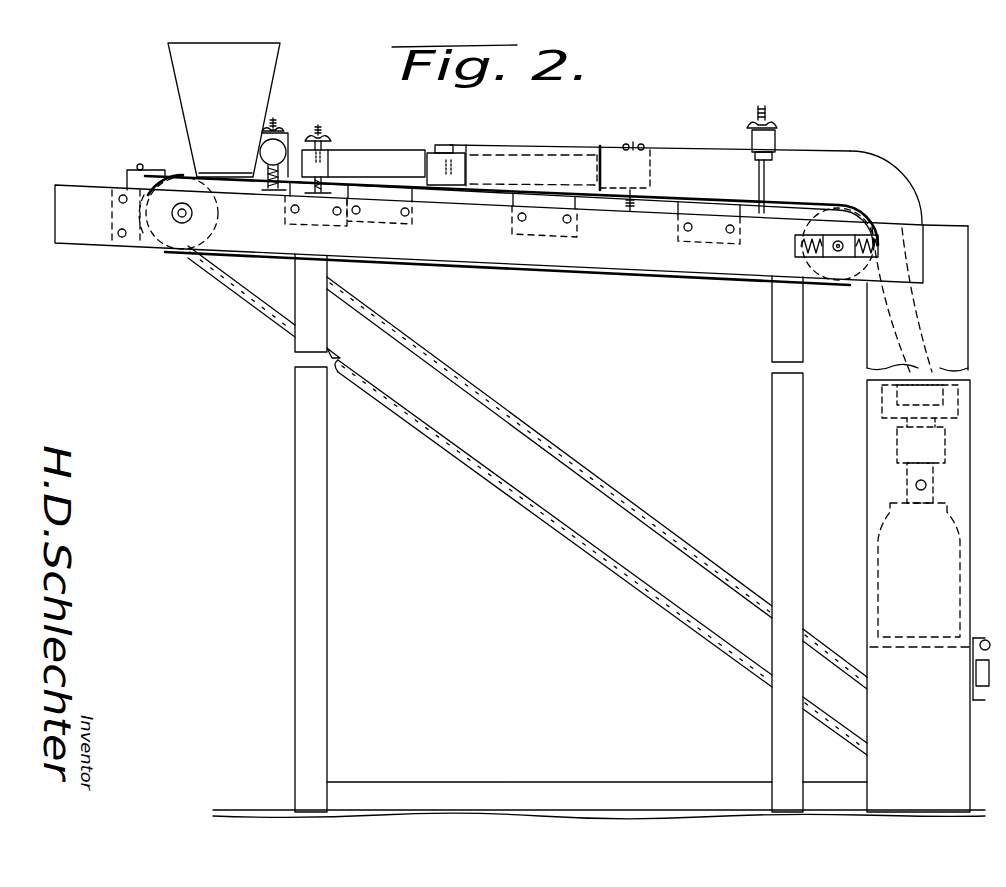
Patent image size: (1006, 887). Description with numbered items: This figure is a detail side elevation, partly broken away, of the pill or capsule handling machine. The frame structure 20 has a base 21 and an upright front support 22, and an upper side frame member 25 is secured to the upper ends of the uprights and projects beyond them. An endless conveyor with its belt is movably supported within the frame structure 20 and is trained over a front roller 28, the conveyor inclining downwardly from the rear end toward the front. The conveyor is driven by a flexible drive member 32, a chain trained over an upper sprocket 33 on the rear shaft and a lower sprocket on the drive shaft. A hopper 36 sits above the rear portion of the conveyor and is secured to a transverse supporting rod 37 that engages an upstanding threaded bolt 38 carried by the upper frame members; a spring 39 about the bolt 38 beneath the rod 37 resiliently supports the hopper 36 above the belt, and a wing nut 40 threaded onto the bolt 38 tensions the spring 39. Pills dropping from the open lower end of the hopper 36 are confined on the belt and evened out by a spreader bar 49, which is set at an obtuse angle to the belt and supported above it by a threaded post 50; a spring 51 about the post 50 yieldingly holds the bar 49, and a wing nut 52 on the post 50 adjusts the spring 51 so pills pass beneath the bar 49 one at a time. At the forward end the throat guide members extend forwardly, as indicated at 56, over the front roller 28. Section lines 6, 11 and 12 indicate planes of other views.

The section line 6- 6 is at (922, 372).
The section line 11- 11 is at (277, 118).
The section line 12- 12 is at (320, 123).
The frame structure 20 is at (770, 700).
The base 21 is at (643, 792).
The upright front support 22 is at (785, 455).
The upper side frame member 25 is at (636, 254).
The front roller 28 is at (300, 583).
The flexible drive member 32 is at (565, 460).
The upper sprocket 33 is at (212, 237).
The hopper 36 is at (190, 92).
The supporting rod 37 is at (267, 147).
The threaded bolt 38 is at (273, 127).
The spring 39 is at (262, 170).
The wing nut 40 is at (287, 128).
The spreader bar 49 is at (410, 152).
The threaded post 50 is at (323, 134).
The spring 51 is at (345, 173).
The wing nut 52 is at (347, 139).
The forward extension of guide members 56 is at (903, 195).